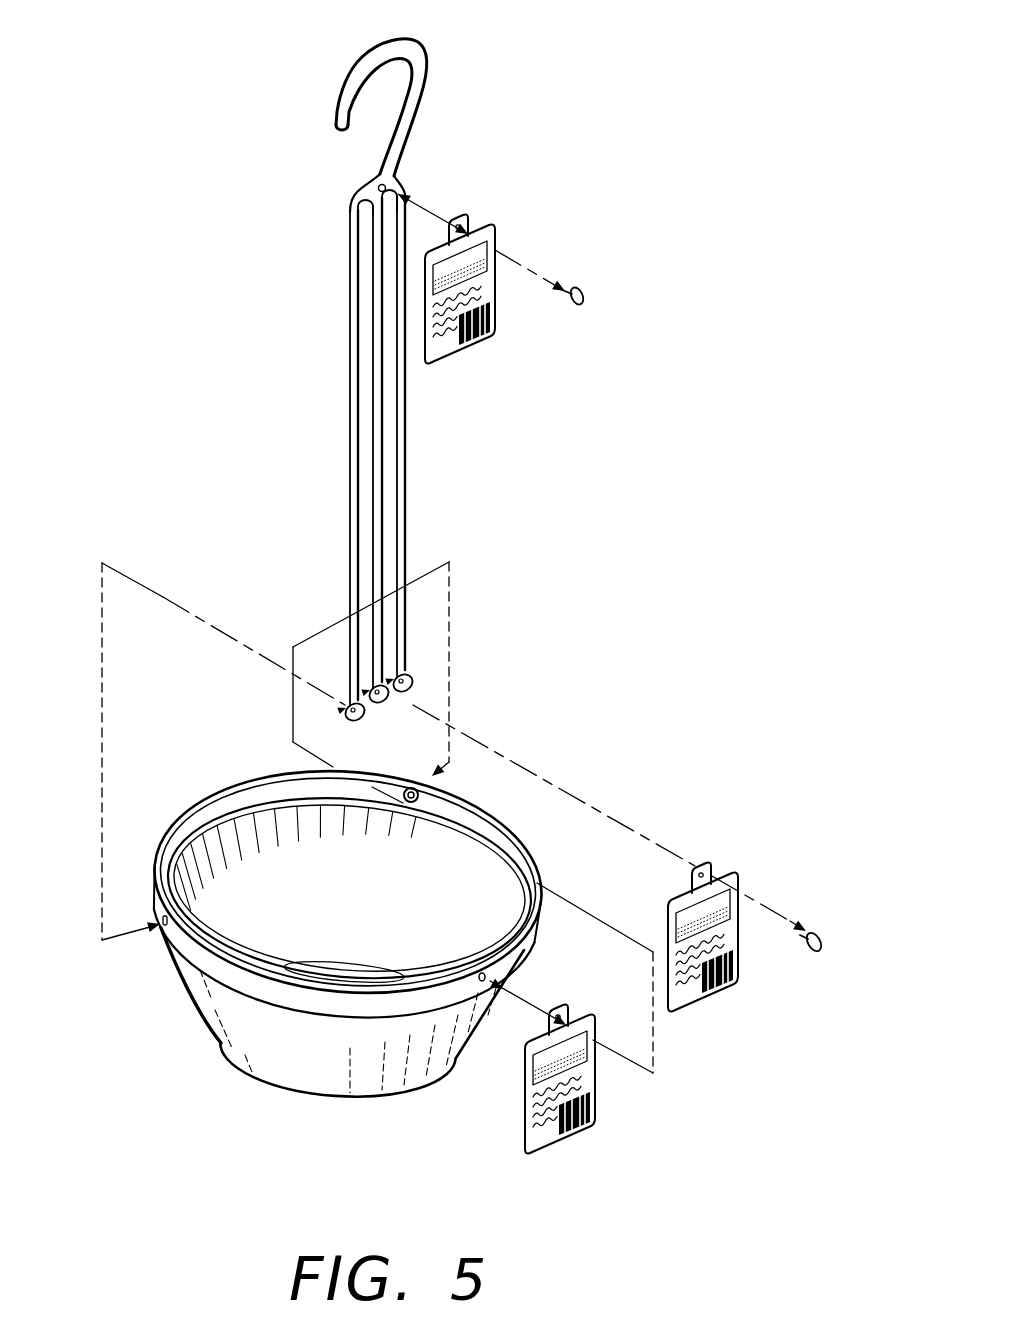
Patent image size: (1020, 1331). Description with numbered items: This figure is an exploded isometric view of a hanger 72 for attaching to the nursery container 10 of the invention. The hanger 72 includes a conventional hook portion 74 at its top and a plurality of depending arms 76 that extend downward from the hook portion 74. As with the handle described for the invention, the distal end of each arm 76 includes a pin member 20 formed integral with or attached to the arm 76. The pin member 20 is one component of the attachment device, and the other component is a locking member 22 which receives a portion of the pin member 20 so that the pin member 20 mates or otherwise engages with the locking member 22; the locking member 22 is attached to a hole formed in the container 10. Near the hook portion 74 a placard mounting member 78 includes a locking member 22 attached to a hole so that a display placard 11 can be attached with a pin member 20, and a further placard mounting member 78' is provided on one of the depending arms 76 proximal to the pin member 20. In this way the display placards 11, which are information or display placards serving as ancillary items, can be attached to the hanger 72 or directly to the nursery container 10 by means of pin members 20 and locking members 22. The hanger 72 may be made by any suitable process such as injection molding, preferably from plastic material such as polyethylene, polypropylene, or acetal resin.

The nursery container 10 is at (166, 1022).
The display placard 11 is at (492, 232).
The pin member 20 is at (585, 296).
The locking member 22 is at (412, 802).
The hanger 72 is at (320, 252).
The hook portion 74 is at (430, 58).
The depending arms 76 is at (404, 497).
The placard mounting member 78 is at (431, 169).
The holes in strip ends 78' is at (330, 666).